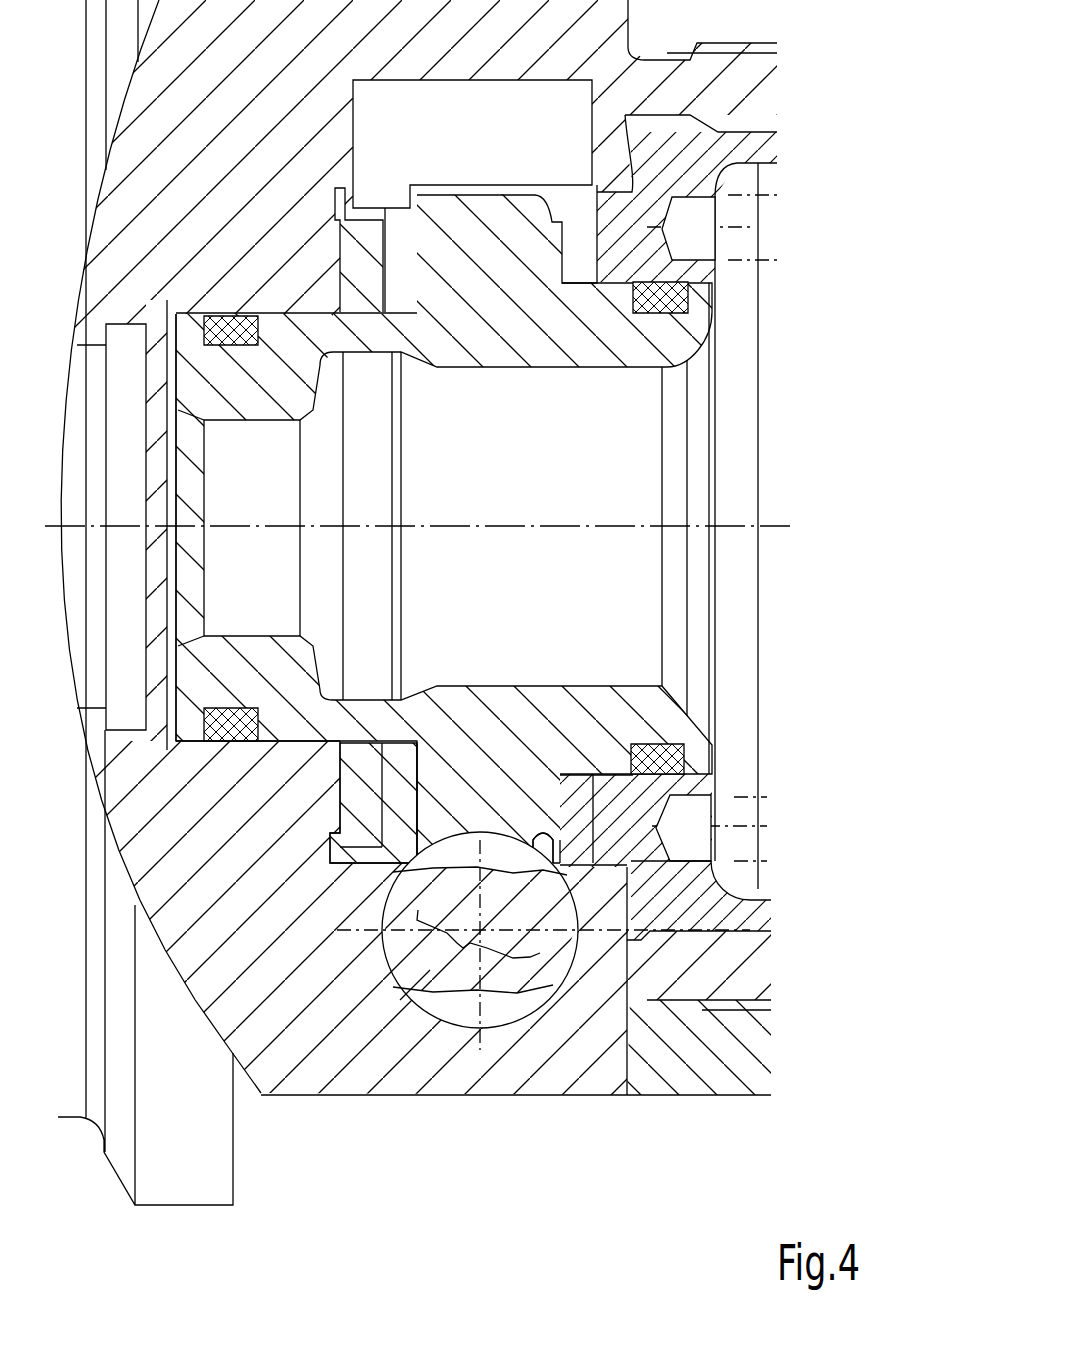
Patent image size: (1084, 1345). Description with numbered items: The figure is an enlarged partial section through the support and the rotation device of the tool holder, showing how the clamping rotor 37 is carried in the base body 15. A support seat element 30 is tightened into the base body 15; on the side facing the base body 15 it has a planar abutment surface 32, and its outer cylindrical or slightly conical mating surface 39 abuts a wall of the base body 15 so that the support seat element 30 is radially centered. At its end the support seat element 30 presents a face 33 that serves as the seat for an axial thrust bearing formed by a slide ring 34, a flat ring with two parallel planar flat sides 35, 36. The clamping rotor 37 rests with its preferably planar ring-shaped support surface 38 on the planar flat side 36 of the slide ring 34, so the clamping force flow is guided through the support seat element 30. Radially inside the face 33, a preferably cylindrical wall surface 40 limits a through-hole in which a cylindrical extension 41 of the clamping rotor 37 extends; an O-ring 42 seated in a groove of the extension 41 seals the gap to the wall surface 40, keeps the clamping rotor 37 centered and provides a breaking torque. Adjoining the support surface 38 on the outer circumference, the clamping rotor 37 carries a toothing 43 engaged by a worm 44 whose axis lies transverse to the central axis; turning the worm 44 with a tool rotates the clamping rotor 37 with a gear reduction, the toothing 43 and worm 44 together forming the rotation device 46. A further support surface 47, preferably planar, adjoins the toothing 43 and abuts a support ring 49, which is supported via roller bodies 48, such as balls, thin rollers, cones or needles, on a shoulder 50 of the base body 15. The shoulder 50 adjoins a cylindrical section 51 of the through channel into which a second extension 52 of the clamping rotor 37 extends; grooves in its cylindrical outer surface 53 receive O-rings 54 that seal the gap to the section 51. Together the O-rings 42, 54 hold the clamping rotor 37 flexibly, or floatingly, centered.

The base body 15 is at (506, 1067).
The support seat element 30 is at (756, 906).
The planar abutment surface 32 is at (643, 897).
The face 33 is at (619, 790).
The slide ring 34 is at (578, 808).
The planar flat side 35 is at (600, 825).
The planar flat side 36 is at (573, 806).
The clamping rotor 37 is at (612, 375).
The support surface 38 is at (546, 776).
The mating surface 39 is at (611, 873).
The wall surface 40 is at (690, 800).
The cylindrical extension 41 is at (660, 712).
The O-ring 42 is at (690, 783).
The toothing 43 is at (457, 843).
The worm 44 is at (542, 951).
The rotation device 46 is at (527, 990).
The further support surface 47 is at (425, 768).
The roller bodies 48 is at (368, 803).
The support ring 49 is at (400, 777).
The shoulder 50 is at (329, 815).
The cylindrical section 51 is at (250, 760).
The extension 52 is at (204, 655).
The outer surface 53 is at (277, 731).
The O-rings 54 is at (219, 721).